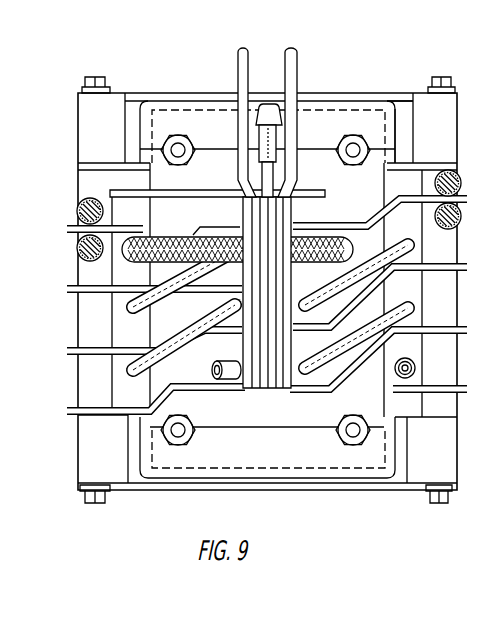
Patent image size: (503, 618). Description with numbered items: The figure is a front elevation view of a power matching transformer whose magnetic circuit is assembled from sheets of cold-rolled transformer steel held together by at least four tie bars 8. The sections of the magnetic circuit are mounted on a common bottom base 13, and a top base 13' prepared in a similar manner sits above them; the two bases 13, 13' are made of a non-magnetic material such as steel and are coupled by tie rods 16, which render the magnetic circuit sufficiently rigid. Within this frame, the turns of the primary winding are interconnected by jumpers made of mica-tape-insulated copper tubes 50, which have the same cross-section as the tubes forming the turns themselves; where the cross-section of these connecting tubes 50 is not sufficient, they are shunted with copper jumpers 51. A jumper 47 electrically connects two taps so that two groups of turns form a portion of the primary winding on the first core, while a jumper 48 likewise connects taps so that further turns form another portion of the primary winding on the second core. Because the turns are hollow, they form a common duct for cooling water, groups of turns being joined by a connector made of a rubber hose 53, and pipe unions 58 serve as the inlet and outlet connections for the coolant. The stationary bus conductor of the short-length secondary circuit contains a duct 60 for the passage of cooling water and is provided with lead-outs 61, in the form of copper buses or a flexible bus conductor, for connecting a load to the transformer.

The common base 13 is at (267, 298).
The top base 13' is at (408, 105).
The tie rods 16 is at (96, 77).
The tie bars 8 is at (187, 144).
The jumper 47 is at (77, 245).
The jumper 48 is at (462, 213).
The mica-tape-insulated copper tubes 50 is at (410, 244).
The copper jumpers 51 is at (67, 350).
The rubber hose 53 is at (152, 246).
The pipe unions 58 is at (222, 381).
The duct 60 is at (291, 62).
The lead-outs 61 is at (274, 141).